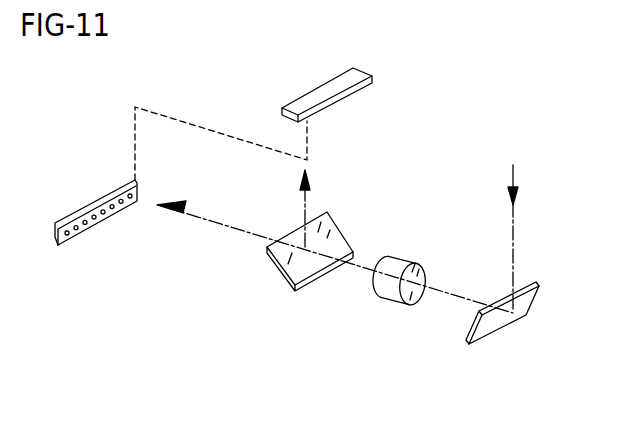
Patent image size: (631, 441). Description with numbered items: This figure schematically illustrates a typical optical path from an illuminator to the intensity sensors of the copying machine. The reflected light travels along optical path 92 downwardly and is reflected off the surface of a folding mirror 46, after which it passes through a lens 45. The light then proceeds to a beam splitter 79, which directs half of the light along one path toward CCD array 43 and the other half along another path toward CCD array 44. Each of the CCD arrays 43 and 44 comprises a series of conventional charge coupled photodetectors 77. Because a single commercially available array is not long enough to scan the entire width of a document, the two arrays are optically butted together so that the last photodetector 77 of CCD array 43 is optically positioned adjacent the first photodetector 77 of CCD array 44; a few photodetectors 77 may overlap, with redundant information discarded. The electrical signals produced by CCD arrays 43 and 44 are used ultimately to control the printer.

The CCD array 43 is at (325, 92).
The CCD array 44 is at (54, 236).
The charge coupled photodetectors 77 is at (118, 207).
The beam splitter 79 is at (274, 262).
The lens 45 is at (385, 290).
The folding mirror 46 is at (497, 325).
The optical path 92 is at (515, 283).